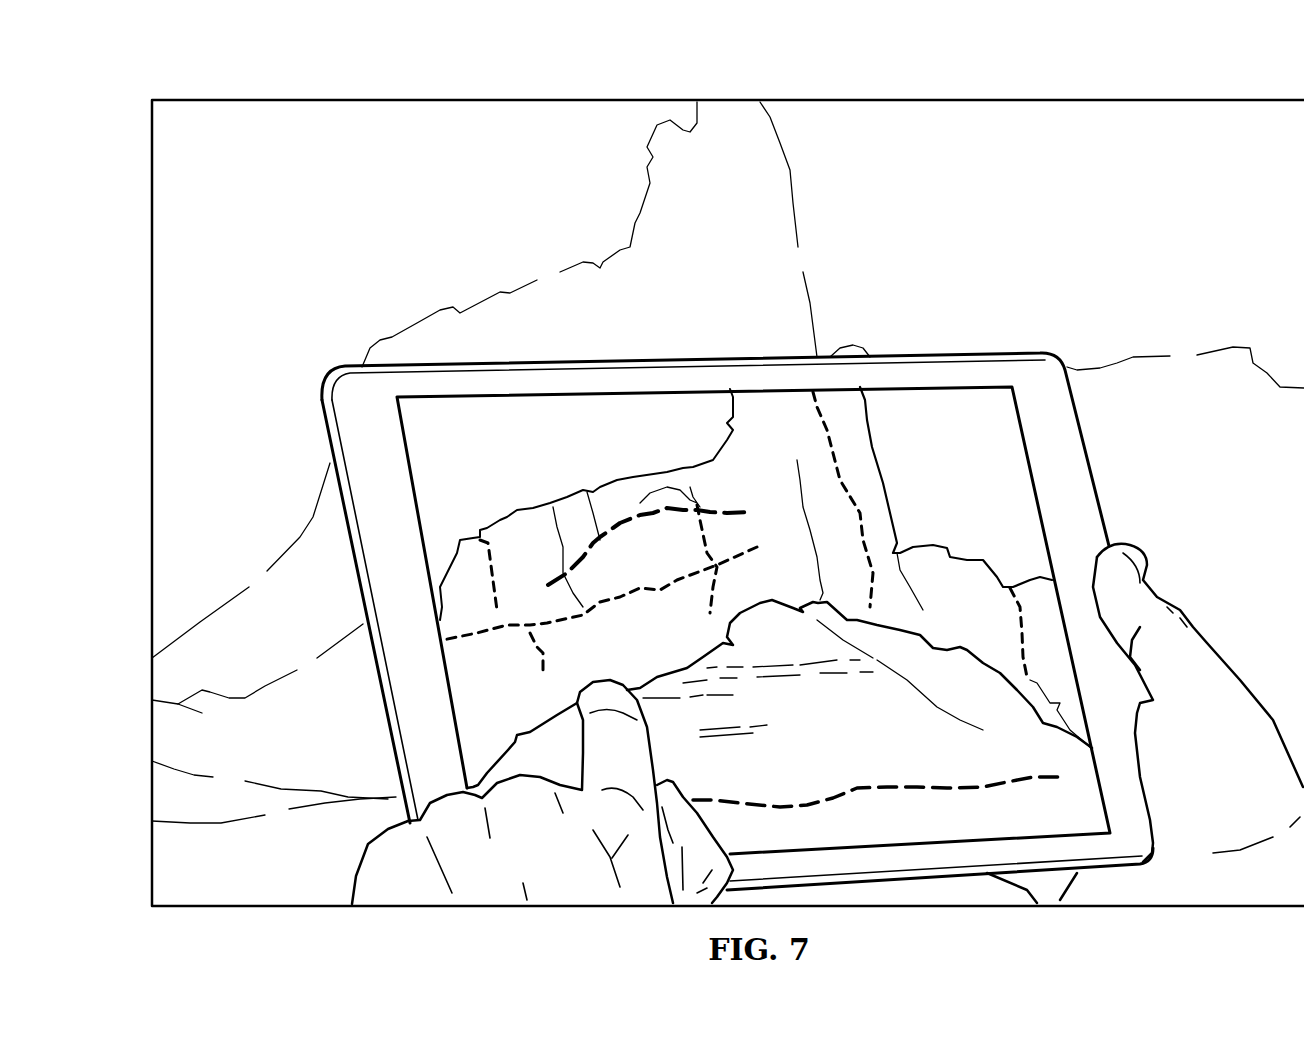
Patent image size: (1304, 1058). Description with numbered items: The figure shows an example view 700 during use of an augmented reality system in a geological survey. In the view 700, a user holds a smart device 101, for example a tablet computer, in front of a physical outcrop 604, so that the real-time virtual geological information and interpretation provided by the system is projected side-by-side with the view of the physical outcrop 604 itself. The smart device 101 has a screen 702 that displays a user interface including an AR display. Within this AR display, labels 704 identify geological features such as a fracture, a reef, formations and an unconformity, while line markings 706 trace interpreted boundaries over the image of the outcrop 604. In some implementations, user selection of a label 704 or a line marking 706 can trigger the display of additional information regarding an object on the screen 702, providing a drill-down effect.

The view 700 is at (246, 94).
The physical outcrop 604 is at (798, 176).
The smart device 101 is at (948, 350).
The screen 702 is at (483, 452).
The labels 704 is at (842, 642).
The line markings 706 is at (753, 599).